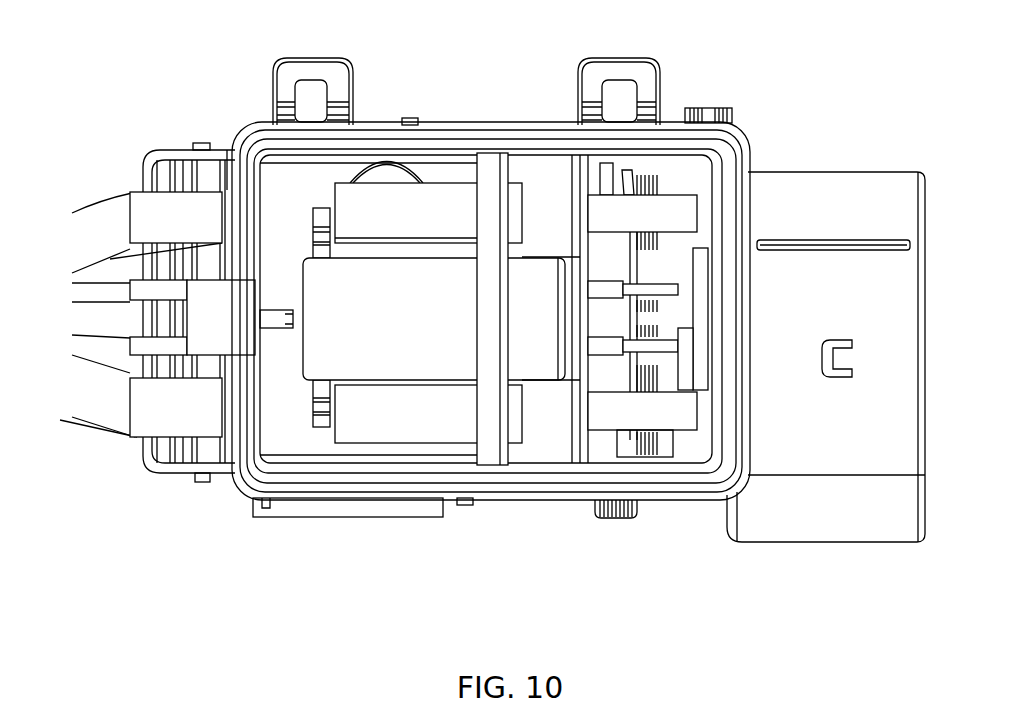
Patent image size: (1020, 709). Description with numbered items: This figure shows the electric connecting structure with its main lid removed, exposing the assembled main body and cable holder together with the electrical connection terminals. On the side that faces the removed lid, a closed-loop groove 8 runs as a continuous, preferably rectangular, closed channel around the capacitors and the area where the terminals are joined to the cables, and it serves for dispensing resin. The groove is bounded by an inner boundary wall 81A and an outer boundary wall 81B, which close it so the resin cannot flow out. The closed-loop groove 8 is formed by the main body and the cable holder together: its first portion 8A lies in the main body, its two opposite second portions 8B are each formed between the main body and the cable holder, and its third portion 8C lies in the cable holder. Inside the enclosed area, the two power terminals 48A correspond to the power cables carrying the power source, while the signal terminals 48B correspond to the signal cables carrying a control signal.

The closed-loop groove 8 is at (448, 122).
The first portion 8A is at (710, 480).
The second portions 8B is at (344, 143).
The third portion 8C is at (243, 425).
The power terminals 48A is at (698, 186).
The signal terminals 48B is at (678, 355).
The inner boundary wall 81A is at (553, 470).
The outer boundary wall 81B is at (630, 497).